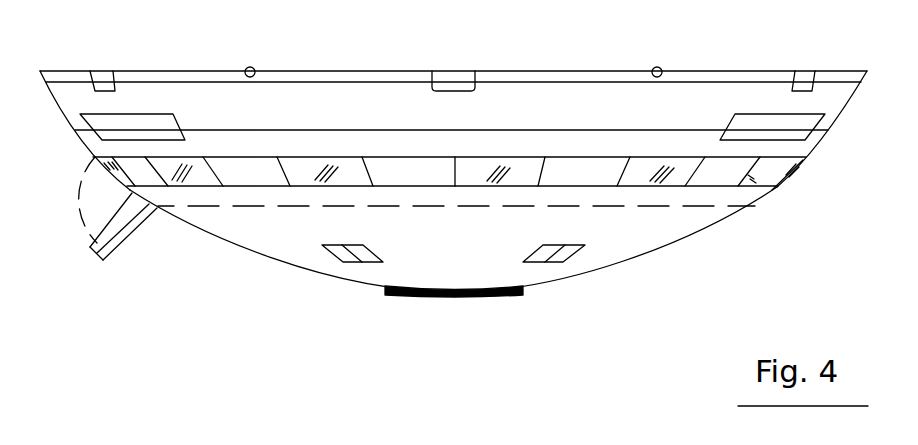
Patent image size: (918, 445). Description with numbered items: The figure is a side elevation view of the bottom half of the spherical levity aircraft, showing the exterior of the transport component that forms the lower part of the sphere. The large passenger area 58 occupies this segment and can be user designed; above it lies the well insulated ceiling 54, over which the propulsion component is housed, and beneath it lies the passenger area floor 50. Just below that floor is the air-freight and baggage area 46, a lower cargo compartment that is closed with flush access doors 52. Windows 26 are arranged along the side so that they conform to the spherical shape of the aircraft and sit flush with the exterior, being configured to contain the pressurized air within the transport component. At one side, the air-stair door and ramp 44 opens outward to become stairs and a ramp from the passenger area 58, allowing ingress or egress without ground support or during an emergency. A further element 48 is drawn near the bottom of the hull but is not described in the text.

The windows 26 is at (302, 173).
The air-stair door and ramp 44 is at (105, 240).
The air-freight and baggage area 46 is at (507, 270).
The keel plate 48 is at (418, 298).
The passenger area floor 50 is at (327, 207).
The flush access doors 52 is at (345, 258).
The well insulated ceiling 54 is at (537, 72).
The transport component passenger area 58 is at (418, 218).